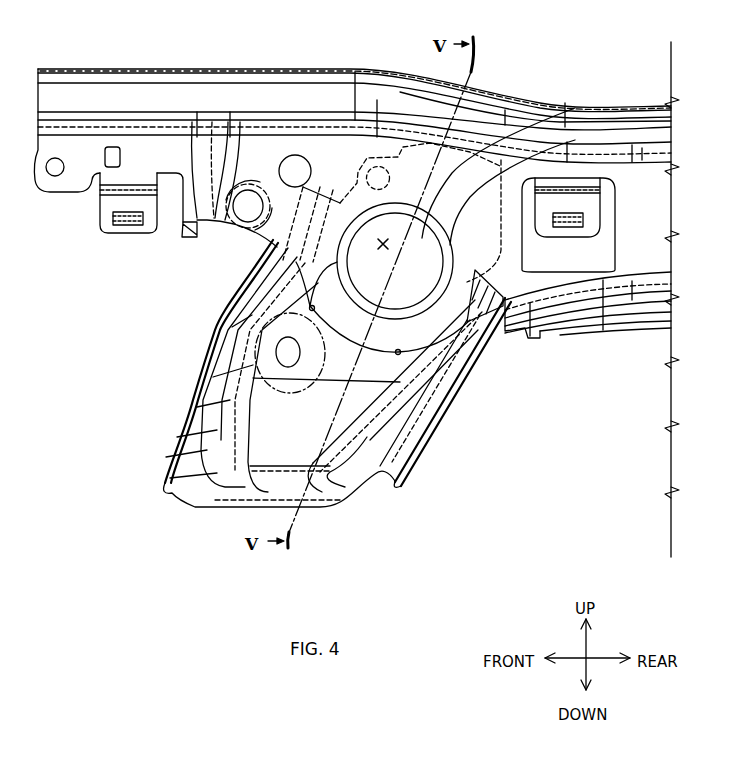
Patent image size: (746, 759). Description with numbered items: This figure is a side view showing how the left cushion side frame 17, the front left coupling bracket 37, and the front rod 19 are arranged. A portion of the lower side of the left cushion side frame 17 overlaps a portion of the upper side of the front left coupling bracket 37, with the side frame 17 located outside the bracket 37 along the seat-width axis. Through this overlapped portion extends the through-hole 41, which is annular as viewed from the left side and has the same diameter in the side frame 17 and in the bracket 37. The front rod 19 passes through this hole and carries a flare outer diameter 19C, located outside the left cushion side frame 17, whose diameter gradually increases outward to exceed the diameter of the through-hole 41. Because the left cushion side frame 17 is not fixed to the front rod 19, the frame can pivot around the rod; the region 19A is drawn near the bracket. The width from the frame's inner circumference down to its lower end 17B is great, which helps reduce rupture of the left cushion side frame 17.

The left cushion side frame 17 is at (345, 175).
The lower end 17B is at (367, 400).
The front rod 19 is at (497, 142).
The bracket lower portion 19A is at (447, 332).
The flare outer diameter 19C is at (437, 234).
The front left coupling bracket 37 is at (417, 440).
The through-hole 41 is at (267, 244).